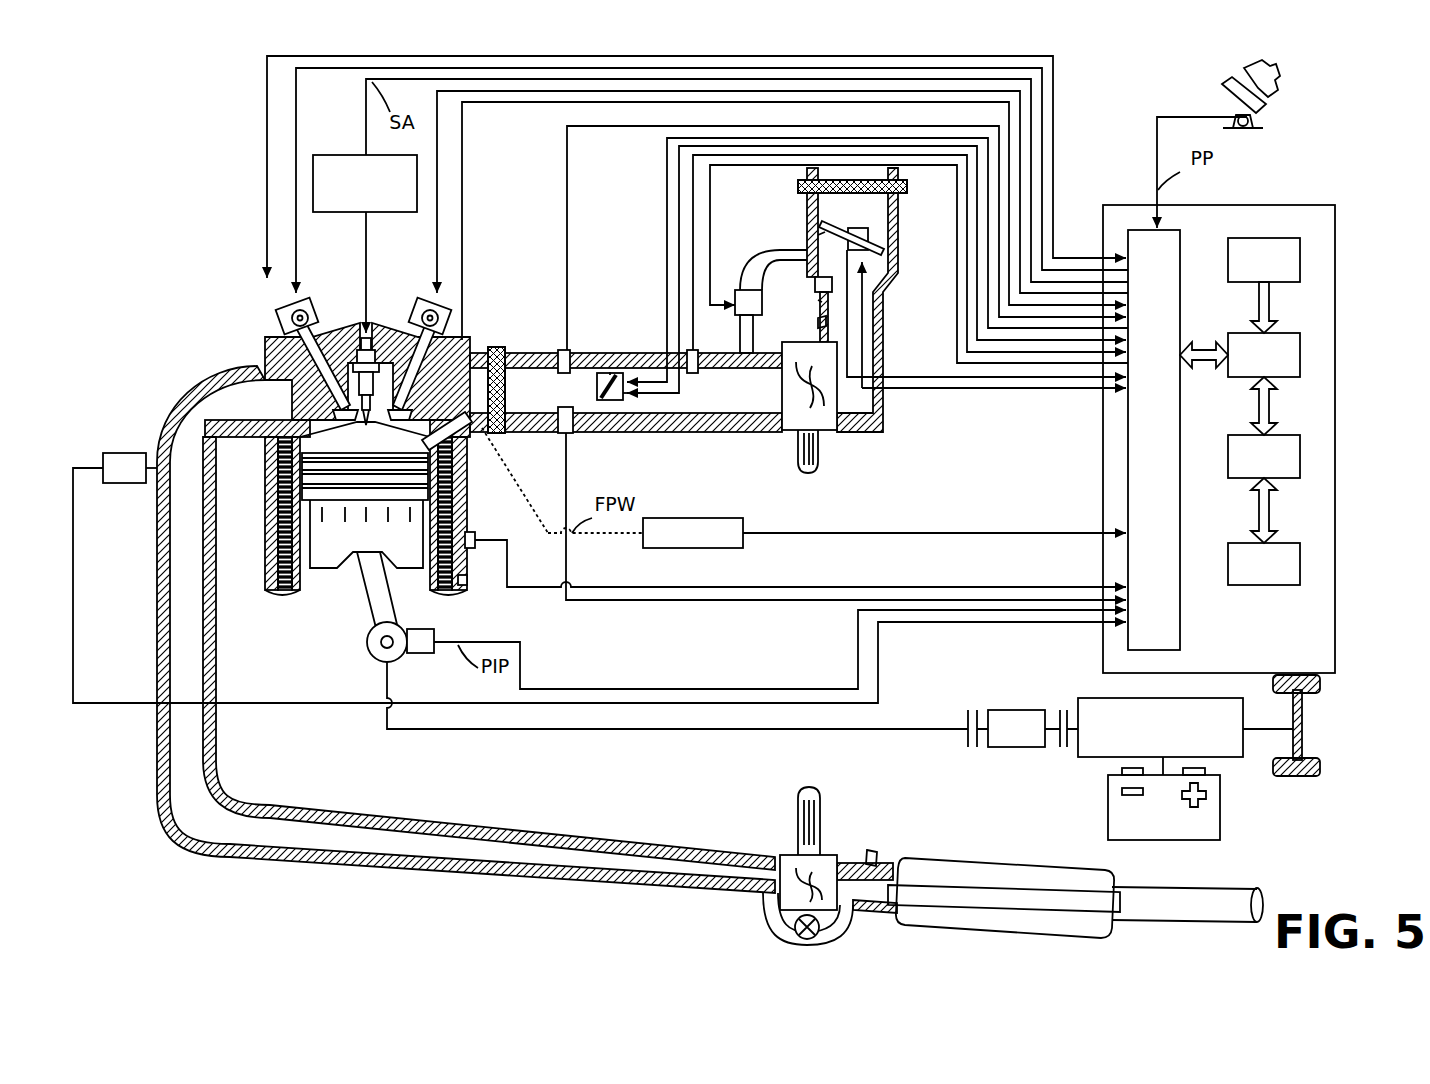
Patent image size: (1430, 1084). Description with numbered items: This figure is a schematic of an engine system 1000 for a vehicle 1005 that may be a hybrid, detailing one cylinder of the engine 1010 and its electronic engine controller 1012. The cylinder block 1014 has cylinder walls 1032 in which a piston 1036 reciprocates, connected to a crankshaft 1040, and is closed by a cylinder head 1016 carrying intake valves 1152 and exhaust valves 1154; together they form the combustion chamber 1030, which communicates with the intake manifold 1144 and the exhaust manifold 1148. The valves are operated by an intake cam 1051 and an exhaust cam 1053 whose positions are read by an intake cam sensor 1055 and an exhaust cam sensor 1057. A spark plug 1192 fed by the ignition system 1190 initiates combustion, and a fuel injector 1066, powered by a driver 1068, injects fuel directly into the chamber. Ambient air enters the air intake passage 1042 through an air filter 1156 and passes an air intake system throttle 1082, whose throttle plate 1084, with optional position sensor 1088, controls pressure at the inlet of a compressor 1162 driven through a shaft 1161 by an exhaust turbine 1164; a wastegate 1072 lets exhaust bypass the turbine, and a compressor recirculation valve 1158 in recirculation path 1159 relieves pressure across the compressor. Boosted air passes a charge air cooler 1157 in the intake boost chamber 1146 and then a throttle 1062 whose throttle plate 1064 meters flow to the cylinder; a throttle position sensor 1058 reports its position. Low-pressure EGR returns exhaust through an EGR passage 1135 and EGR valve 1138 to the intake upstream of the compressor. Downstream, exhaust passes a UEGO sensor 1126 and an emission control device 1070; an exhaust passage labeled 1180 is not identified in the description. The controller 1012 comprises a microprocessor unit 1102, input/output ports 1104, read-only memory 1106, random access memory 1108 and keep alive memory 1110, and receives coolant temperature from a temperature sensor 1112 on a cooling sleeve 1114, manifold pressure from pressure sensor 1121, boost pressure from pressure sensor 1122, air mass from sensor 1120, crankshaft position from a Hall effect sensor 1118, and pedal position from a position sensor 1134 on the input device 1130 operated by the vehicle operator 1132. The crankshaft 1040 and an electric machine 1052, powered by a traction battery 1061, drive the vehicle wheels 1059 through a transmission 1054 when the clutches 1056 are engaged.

The engine system 1000 is at (150, 117).
The vehicle 1005 is at (1340, 716).
The engine 1010 is at (195, 270).
The electronic engine controller 1012 is at (1335, 207).
The cylinder block 1014 is at (285, 496).
The cylinder head 1016 is at (486, 335).
The combustion chamber 1030 is at (295, 520).
The cylinder walls 1032 is at (305, 592).
The piston 1036 is at (348, 545).
The crankshaft 1040 is at (372, 660).
The air intake passage 1042 is at (852, 300).
The intake cam 1051 is at (440, 303).
The electric machine 1052 is at (1020, 747).
The exhaust cam 1053 is at (305, 303).
The transmission 1054 is at (1220, 757).
The intake cam sensor 1055 is at (445, 330).
The clutches 1056 is at (968, 712).
The exhaust cam sensor 1057 is at (292, 322).
The throttle position sensor 1058 is at (625, 400).
The vehicle wheels 1059 is at (1300, 778).
The traction battery 1061 is at (1168, 840).
The throttle 1062 is at (604, 373).
The throttle plate 1064 is at (612, 372).
The fuel injector 1066 is at (470, 432).
The driver 1068 is at (730, 518).
The emission control device 1070 is at (820, 925).
The wastegate 1072 is at (790, 936).
The air intake system throttle 1082 is at (818, 236).
The throttle plate 1084 is at (830, 226).
The position sensor 1088 is at (848, 240).
The microprocessor unit 1102 is at (1300, 355).
The input/output ports 1104 is at (1182, 240).
The read-only memory 1106 is at (1300, 258).
The random access memory 1108 is at (1300, 455).
The keep alive memory 1110 is at (1300, 562).
The temperature sensor 1112 is at (475, 535).
The cooling sleeve 1114 is at (467, 580).
The Hall effect sensor 1118 is at (418, 653).
The air mass sensor 1120 is at (573, 433).
The pressure sensor 1121 is at (568, 350).
The pressure sensor 1122 is at (698, 355).
The UEGO sensor 1126 is at (115, 453).
The input device 1130 is at (1225, 95).
The vehicle operator 1132 is at (1280, 75).
The position sensor 1134 is at (1256, 118).
The EGR passage 1135 is at (868, 866).
The EGR valve 1138 is at (815, 284).
The intake manifold 1144 is at (626, 379).
The intake boost chamber 1146 is at (626, 408).
The exhaust manifold 1148 is at (257, 413).
The intake valves 1152 is at (410, 420).
The exhaust valves 1154 is at (335, 412).
The air filter 1156 is at (907, 187).
The charge air cooler 1157 is at (507, 435).
The compressor recirculation valve 1158 is at (742, 290).
The compressor recirculation path 1159 is at (820, 300).
The shaft 1161 is at (822, 808).
The compressor 1162 is at (837, 430).
The turbine 1164 is at (790, 855).
The exhaust passage 1180 is at (418, 874).
The ignition system 1190 is at (356, 155).
The spark plug 1192 is at (372, 335).